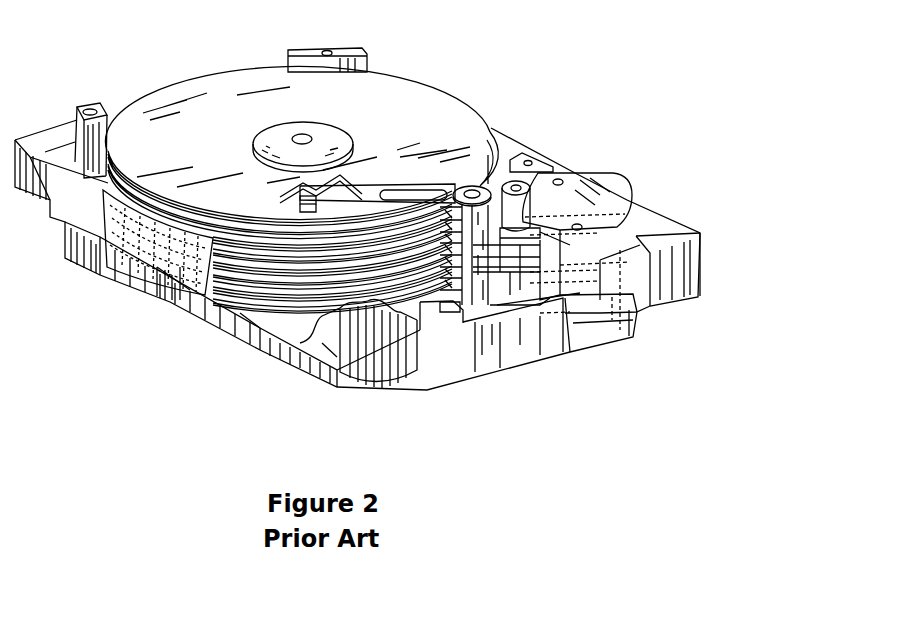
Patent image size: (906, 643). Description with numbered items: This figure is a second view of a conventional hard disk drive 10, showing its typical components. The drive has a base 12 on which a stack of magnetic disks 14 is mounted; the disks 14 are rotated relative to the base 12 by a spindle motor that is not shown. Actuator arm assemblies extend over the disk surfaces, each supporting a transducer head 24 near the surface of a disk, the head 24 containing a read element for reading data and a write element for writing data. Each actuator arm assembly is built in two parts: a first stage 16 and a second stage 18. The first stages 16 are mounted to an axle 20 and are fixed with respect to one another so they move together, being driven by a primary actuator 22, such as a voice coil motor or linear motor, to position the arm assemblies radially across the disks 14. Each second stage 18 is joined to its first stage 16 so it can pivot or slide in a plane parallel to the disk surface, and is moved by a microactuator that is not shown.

The disk drive 10 is at (674, 100).
The base 12 is at (542, 153).
The magnetic disks 14 is at (444, 91).
The first stage 16 is at (363, 194).
The second stage 18 is at (322, 188).
The axle 20 is at (472, 182).
The primary actuator 22 is at (610, 193).
The transducer head 24 is at (301, 198).